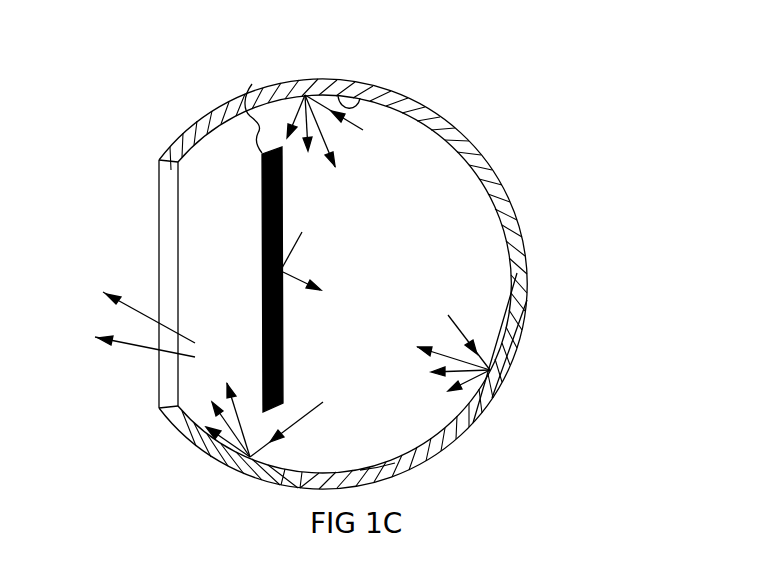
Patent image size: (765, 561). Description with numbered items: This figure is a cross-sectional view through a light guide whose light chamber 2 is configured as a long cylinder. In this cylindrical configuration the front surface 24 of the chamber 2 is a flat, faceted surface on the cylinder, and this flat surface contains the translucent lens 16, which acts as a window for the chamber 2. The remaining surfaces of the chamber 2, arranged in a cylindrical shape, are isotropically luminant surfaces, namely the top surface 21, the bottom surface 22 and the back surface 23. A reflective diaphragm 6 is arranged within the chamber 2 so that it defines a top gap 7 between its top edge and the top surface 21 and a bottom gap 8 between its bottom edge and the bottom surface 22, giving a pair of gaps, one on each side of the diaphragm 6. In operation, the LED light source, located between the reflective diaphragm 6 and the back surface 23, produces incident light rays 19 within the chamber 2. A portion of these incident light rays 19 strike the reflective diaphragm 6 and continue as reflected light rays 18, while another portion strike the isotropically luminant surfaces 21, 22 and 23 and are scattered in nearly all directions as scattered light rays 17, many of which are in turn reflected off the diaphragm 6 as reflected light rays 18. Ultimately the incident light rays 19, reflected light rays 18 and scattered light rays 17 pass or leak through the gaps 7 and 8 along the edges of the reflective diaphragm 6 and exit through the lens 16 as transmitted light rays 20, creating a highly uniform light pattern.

The light chamber 2 is at (447, 103).
The reflective diaphragm 6 is at (262, 168).
The top gap 7 is at (252, 84).
The bottom gap 8 is at (262, 458).
The translucent lens 16 is at (160, 376).
The scattered light rays 17 is at (291, 112).
The reflected light rays 18 is at (293, 272).
The incident light rays 19 is at (363, 130).
The transmitted light rays 20 is at (133, 307).
The top surface 21 is at (361, 98).
The bottom surface 22 is at (378, 459).
The back surface 23 is at (503, 262).
The front surface 24 is at (177, 226).